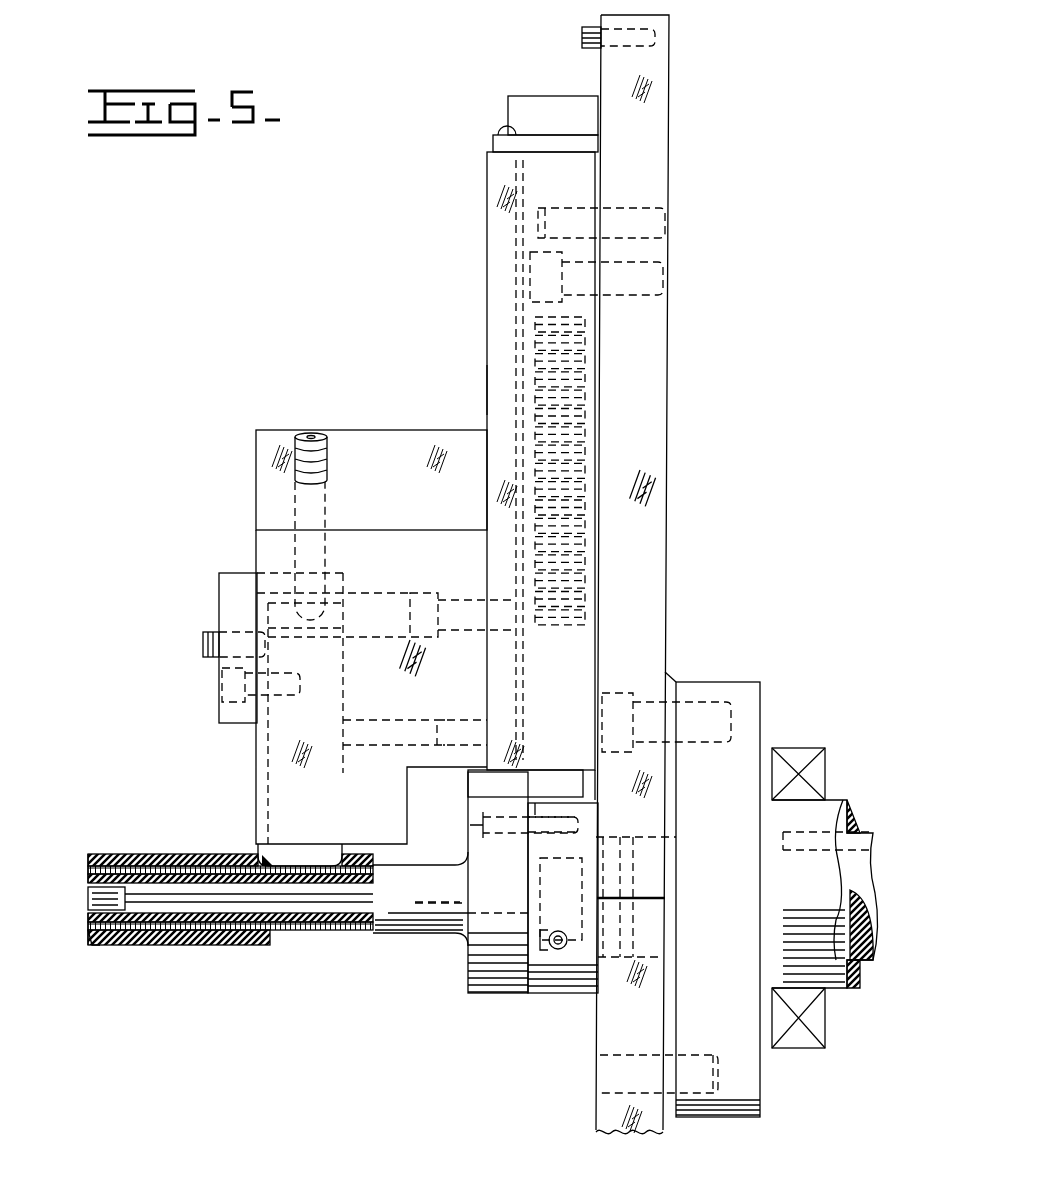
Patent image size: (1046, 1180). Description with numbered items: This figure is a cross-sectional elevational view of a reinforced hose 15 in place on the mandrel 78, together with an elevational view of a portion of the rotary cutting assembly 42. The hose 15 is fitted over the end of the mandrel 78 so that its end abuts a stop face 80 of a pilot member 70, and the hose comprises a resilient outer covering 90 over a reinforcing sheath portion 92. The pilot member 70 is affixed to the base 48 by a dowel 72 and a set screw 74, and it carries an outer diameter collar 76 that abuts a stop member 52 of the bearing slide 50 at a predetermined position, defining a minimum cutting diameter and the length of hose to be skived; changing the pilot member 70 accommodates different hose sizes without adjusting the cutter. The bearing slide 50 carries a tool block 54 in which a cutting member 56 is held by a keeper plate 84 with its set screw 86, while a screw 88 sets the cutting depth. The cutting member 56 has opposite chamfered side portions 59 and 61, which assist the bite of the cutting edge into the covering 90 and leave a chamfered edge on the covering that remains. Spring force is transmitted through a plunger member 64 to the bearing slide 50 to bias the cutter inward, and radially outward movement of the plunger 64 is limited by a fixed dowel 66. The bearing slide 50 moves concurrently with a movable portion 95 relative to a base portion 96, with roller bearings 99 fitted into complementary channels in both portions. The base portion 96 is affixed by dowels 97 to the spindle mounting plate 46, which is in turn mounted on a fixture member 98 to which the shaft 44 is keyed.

The reinforced hose 15 is at (183, 956).
The drive assembly 42 is at (695, 400).
The shaft 44 is at (855, 880).
The spindle mounting plate 46 is at (660, 106).
The base 48 is at (577, 983).
The bearing slide 50 is at (478, 327).
The stop member 52 is at (477, 782).
The tool block 54 is at (390, 507).
The cutting member 56 is at (318, 847).
The side portion 59 is at (343, 860).
The chamfered side 61 is at (265, 857).
The plunger member 64 is at (575, 128).
The fixed dowel 66 is at (582, 37).
The pilot member 70 is at (447, 944).
The dowel 72 is at (480, 826).
The set screw 74 is at (565, 948).
The outer diameter collar 76 is at (510, 985).
The mandrel 78 is at (110, 897).
The stop face 80 is at (365, 900).
The keeper plate 84 is at (225, 573).
The set screw 86 is at (203, 645).
The screw 88 is at (312, 433).
The resilient outer covering 90 is at (222, 945).
The reinforcing sheath portion 92 is at (88, 936).
The movable portion 95 is at (497, 388).
The base portion 96 is at (598, 182).
The dowels 97 is at (668, 277).
The fixture member 98 is at (735, 690).
The roller bearings 99 is at (582, 412).